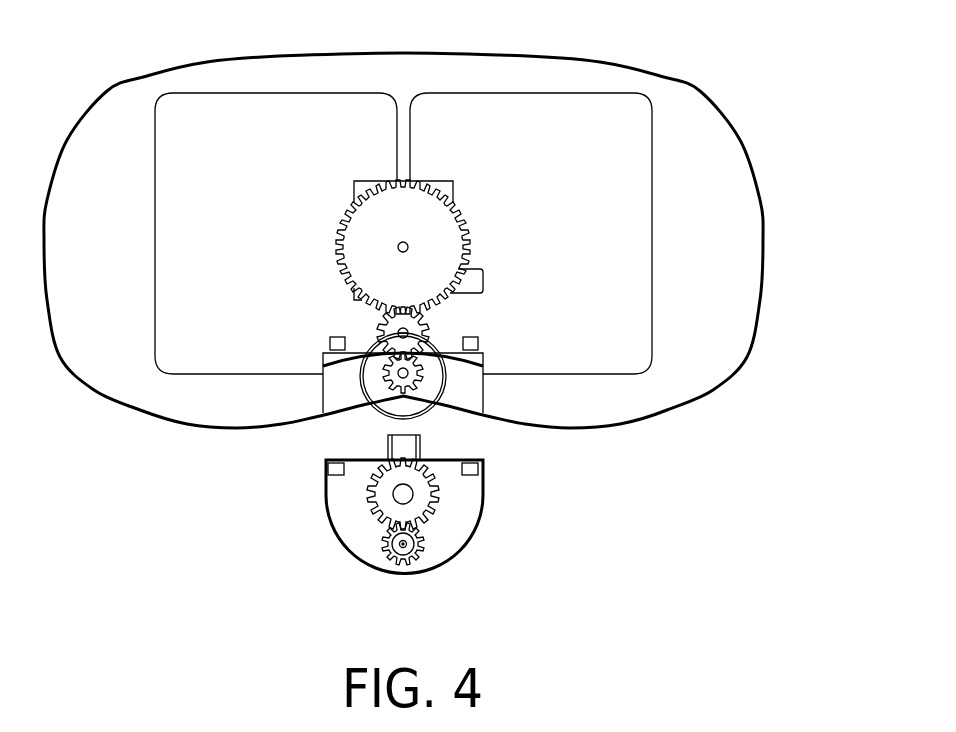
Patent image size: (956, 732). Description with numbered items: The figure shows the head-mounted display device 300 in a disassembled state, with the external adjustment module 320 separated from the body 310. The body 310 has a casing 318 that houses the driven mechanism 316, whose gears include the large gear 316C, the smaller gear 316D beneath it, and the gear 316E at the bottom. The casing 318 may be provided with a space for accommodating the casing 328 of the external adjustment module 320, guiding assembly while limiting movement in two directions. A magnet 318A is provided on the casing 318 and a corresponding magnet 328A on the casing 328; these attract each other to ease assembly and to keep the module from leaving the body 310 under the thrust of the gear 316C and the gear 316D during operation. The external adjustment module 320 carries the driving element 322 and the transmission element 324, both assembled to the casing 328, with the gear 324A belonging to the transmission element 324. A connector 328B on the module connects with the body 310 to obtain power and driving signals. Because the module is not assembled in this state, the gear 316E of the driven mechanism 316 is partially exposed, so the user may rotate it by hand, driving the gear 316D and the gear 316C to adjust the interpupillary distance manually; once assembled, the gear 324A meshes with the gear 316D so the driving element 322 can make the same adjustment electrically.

The head-mounted display device 300 is at (755, 583).
The body 310 is at (703, 398).
The driven mechanism 316 is at (323, 272).
The gear 316C is at (432, 203).
The gear 316D is at (380, 330).
The gear 316E is at (383, 407).
The casing 318 is at (733, 249).
The magnet 318A is at (478, 343).
The external adjustment module 320 is at (330, 550).
The driving element 322 is at (417, 553).
The transmission element 324 is at (428, 544).
The gear 324A is at (423, 497).
The casing 328 is at (325, 500).
The magnet 328A is at (478, 468).
The connector 328B is at (413, 447).